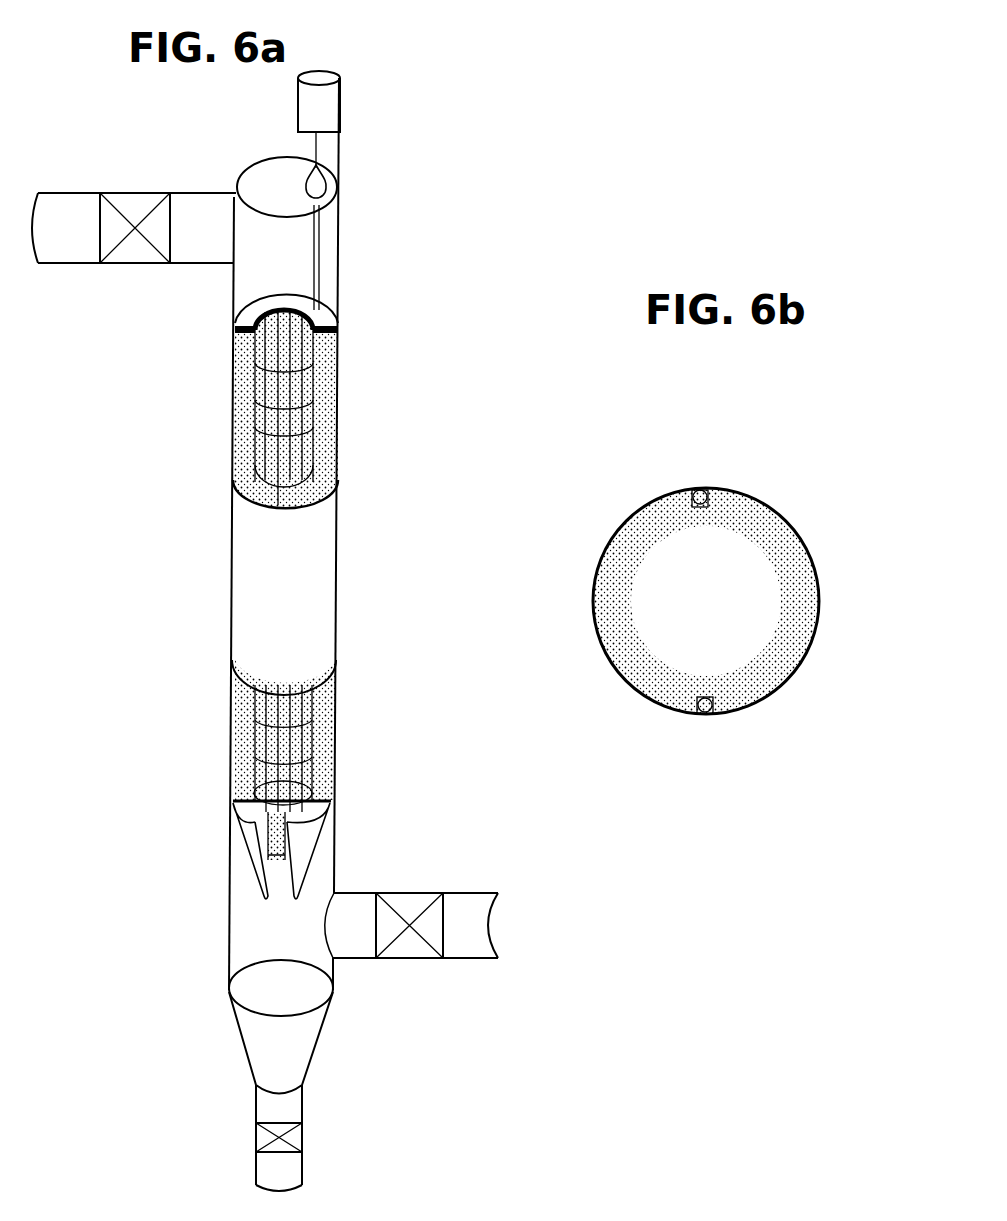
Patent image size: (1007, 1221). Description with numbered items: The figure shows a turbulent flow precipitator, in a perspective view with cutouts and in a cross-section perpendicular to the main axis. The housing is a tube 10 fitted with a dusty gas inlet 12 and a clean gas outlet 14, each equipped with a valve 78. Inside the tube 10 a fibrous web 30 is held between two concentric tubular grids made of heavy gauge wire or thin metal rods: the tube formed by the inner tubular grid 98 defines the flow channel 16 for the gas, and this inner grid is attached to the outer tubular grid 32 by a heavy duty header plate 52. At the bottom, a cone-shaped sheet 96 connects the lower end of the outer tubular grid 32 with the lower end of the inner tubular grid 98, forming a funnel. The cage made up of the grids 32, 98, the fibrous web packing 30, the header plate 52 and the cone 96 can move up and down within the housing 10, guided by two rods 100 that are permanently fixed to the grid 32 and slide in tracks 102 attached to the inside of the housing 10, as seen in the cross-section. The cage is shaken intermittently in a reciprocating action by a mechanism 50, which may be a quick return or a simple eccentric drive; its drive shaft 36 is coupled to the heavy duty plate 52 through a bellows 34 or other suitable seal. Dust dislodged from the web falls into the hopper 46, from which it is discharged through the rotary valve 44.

In FIG. 6a, the tube 10 is at (228, 557).
In FIG. 6b, the tube 10 is at (735, 480).
In FIG. 6a, the dusty gas inlet 12 is at (463, 925).
In FIG. 6a, the clean gas outlet 14 is at (67, 222).
In FIG. 6a, the flow channel 16 is at (314, 305).
In FIG. 6b, the flow channel 16 is at (692, 608).
In FIG. 6a, the fibrous web 30 is at (325, 345).
In FIG. 6b, the fibrous web 30 is at (662, 688).
In FIG. 6a, the outer tubular grid 32 is at (243, 387).
In FIG. 6b, the outer tubular grid 32 is at (641, 506).
In FIG. 6a, the bellows 34 is at (326, 178).
In FIG. 6a, the drive shaft 36 is at (316, 168).
In FIG. 6a, the rotary valve 44 is at (297, 1135).
In FIG. 6a, the hopper 46 is at (275, 1042).
In FIG. 6a, the mechanism 50 is at (342, 82).
In FIG. 6a, the heavy duty header plate 52 is at (338, 312).
In FIG. 6a, the valves 78 is at (132, 215).
In FIG. 6a, the cone-shaped sheet 96 is at (310, 840).
In FIG. 6a, the inner tubular grid 98 is at (250, 457).
In FIG. 6b, the inner tubular grid 98 is at (782, 556).
In FIG. 6b, the rods 100 is at (693, 523).
In FIG. 6b, the tracks 102 is at (710, 503).